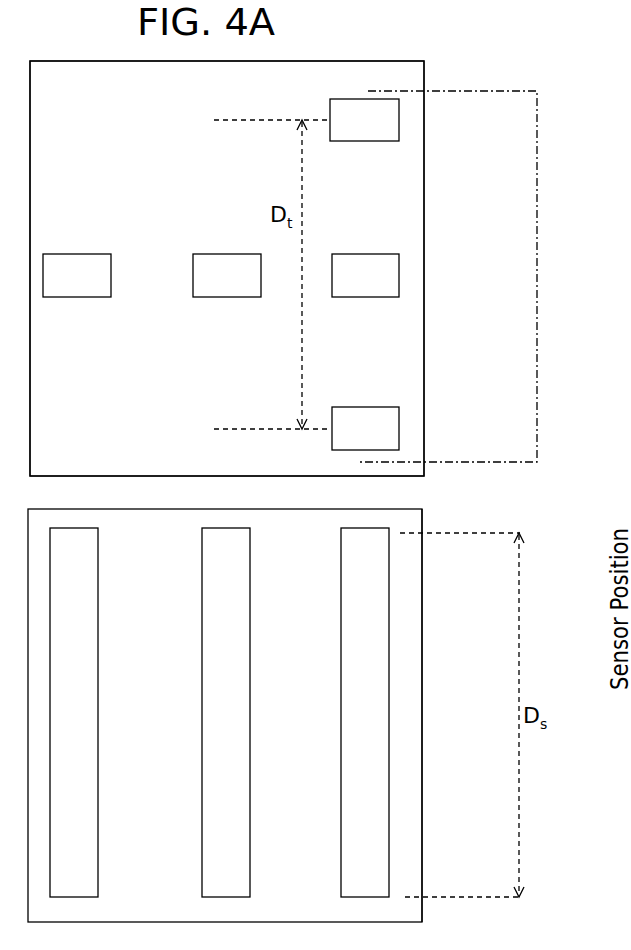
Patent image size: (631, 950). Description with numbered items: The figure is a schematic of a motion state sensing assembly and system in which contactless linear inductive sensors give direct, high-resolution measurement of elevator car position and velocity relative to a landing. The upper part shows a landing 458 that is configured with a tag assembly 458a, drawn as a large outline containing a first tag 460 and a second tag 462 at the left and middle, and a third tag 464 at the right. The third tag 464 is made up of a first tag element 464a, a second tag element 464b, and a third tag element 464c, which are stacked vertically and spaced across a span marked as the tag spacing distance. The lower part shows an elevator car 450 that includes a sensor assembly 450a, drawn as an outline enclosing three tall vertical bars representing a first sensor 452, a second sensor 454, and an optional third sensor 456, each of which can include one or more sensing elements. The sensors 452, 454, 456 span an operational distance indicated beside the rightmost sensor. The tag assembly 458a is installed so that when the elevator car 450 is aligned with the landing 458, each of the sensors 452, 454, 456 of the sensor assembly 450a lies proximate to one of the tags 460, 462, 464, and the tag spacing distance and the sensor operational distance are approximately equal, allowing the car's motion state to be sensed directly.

The landing 458 is at (495, 44).
The tag assembly 458a is at (336, 61).
The first tag 460 is at (80, 272).
The second tag 462 is at (225, 290).
The third tag 464 is at (538, 278).
The first tag element 464a is at (364, 265).
The second tag element 464b is at (378, 134).
The third tag element 464c is at (368, 420).
The elevator car 450 is at (440, 518).
The sensor assembly 450a is at (422, 806).
The first sensor 452 is at (98, 688).
The second sensor 454 is at (250, 689).
The third sensor 456 is at (390, 730).